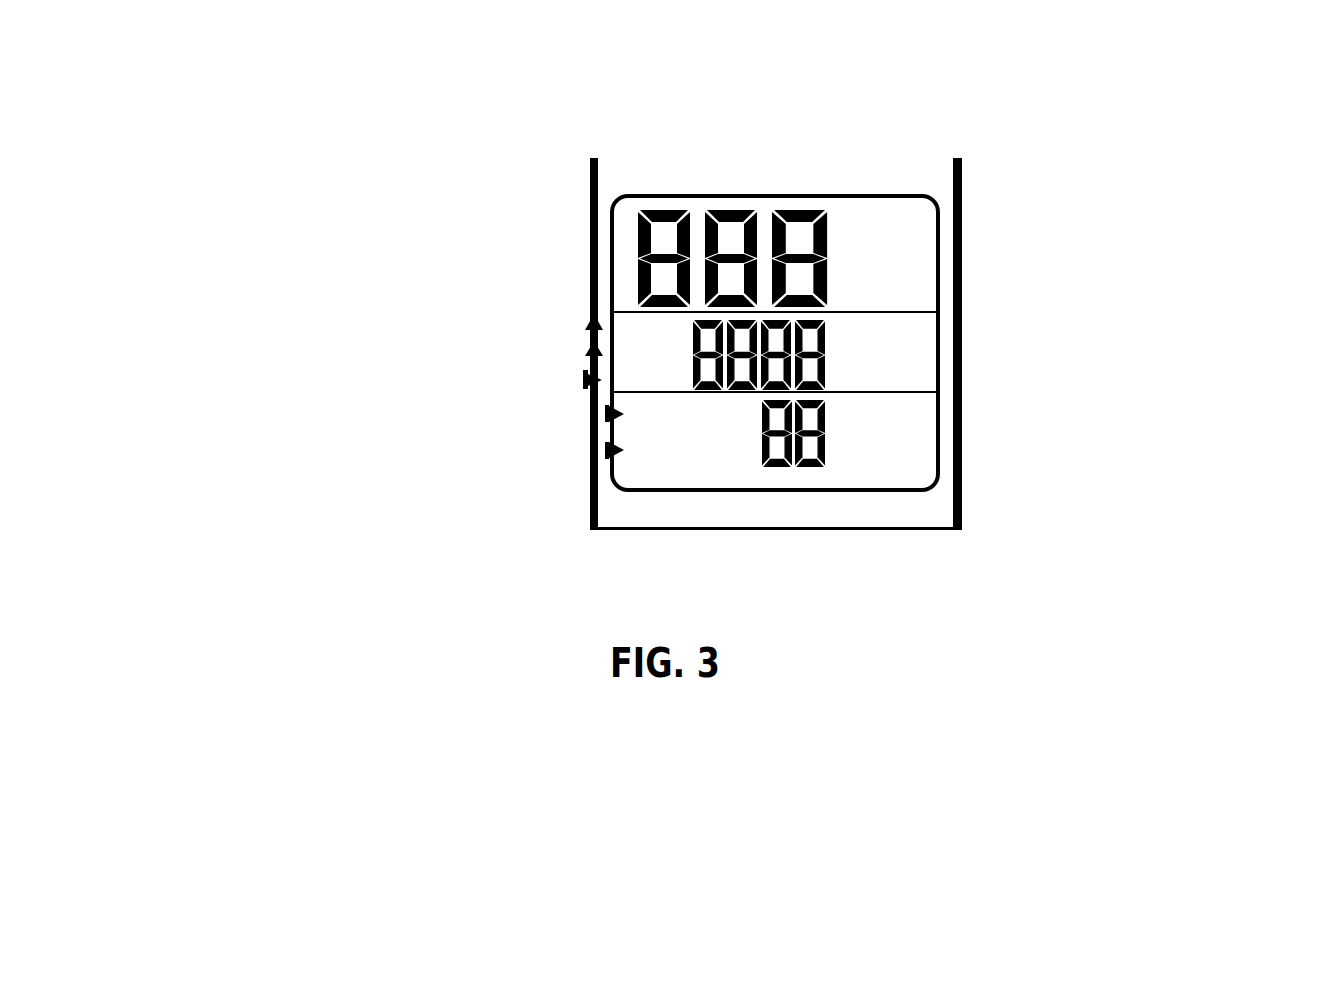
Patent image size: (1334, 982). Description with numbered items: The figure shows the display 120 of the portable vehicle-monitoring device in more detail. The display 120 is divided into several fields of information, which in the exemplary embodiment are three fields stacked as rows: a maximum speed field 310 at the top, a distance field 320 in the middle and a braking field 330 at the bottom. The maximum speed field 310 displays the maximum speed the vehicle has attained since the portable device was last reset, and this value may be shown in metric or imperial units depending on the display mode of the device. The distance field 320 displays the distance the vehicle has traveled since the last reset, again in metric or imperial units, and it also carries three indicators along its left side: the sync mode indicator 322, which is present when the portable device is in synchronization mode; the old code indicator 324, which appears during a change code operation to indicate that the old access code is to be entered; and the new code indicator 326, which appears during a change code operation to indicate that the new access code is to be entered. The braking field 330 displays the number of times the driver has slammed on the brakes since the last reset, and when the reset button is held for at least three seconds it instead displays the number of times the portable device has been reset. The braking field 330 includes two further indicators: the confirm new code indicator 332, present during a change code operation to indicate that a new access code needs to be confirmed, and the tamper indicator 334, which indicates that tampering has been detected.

The display 120 is at (1015, 192).
The maximum speed field 310 is at (978, 263).
The distance field 320 is at (977, 356).
The braking field 330 is at (977, 450).
The sync mode indicator 322 is at (361, 278).
The old code indicator 324 is at (373, 326).
The new code indicator 326 is at (583, 380).
The confirm new code indicator 332 is at (605, 413).
The tamper indicator 334 is at (605, 450).